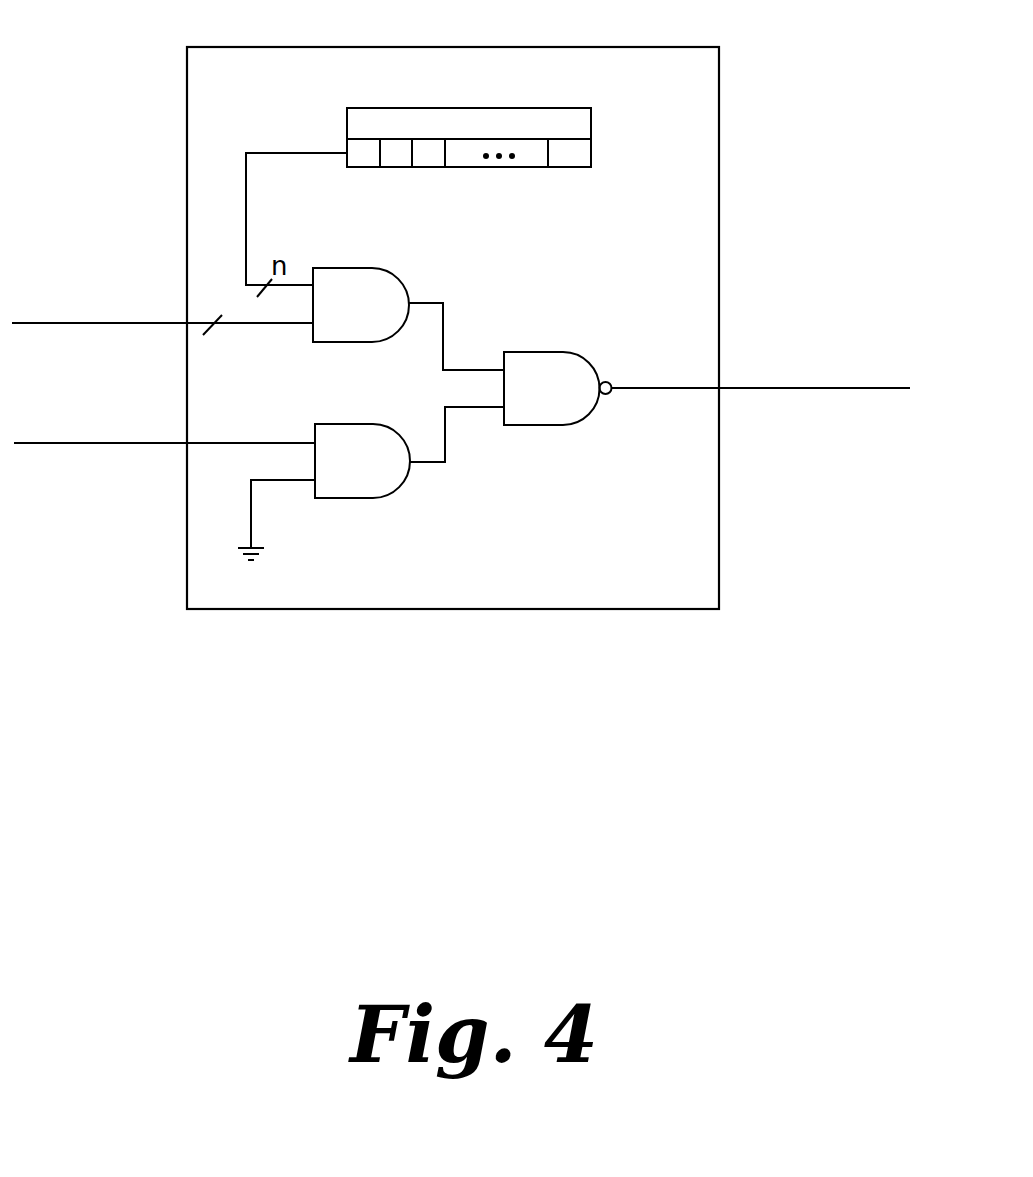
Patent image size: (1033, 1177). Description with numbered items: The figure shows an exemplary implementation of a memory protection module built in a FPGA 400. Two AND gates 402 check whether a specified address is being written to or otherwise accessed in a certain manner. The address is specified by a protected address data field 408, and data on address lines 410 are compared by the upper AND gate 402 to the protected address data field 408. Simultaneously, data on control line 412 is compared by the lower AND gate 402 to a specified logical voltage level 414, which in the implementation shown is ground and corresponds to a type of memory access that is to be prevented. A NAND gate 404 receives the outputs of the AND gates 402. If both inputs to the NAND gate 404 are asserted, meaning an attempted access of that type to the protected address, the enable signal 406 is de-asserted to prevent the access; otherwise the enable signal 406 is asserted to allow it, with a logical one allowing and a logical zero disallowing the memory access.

The FPGA 400 is at (670, 83).
The AND gates 402 is at (381, 316).
The NAND gate 404 is at (573, 399).
The enable signal 406 is at (766, 388).
The protected address data field 408 is at (591, 150).
The address lines 410 is at (78, 323).
The control line 412 is at (62, 443).
The logical voltage level 414 is at (251, 520).